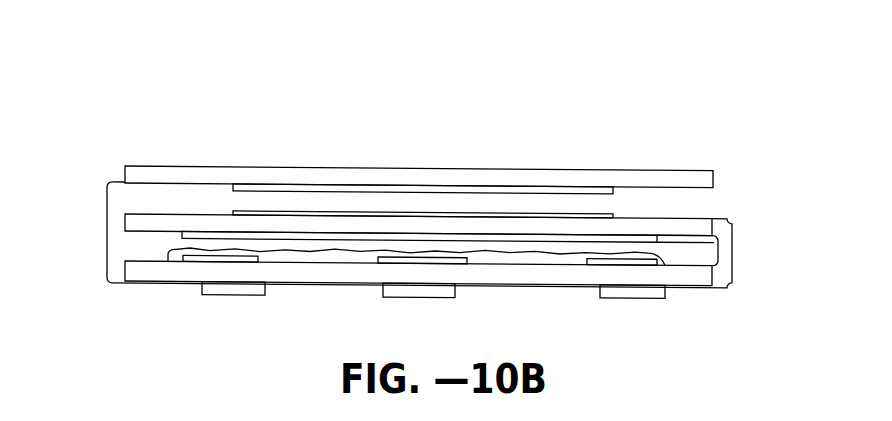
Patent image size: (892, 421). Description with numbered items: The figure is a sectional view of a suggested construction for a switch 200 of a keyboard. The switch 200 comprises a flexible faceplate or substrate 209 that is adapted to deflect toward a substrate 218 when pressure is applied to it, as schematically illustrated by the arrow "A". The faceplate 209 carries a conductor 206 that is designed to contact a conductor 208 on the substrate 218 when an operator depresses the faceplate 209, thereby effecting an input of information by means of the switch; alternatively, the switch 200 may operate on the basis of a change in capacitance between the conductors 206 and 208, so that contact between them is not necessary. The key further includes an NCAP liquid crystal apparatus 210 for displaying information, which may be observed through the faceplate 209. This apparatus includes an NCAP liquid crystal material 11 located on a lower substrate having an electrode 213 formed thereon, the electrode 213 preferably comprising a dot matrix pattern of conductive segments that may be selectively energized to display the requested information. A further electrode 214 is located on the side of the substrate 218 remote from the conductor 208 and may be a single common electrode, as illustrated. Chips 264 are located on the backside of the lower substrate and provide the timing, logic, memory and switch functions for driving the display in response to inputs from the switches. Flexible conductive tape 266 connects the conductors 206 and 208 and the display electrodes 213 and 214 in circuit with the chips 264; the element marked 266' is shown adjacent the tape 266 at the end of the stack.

The switch 200 is at (634, 74).
The arrow A is at (470, 160).
The NCAP liquid crystal apparatus 210 is at (140, 248).
The flexible faceplate 209 is at (374, 175).
The conductor 206 is at (276, 188).
The conductor 208 is at (233, 210).
The substrate 218 is at (682, 225).
The electrode 214 is at (520, 240).
The NCAP liquid crystal material 11 is at (315, 253).
The electrode 213 is at (198, 261).
The chips 264 is at (226, 290).
The flexible conductive tape 266 is at (609, 253).
The end cap 266' is at (728, 248).